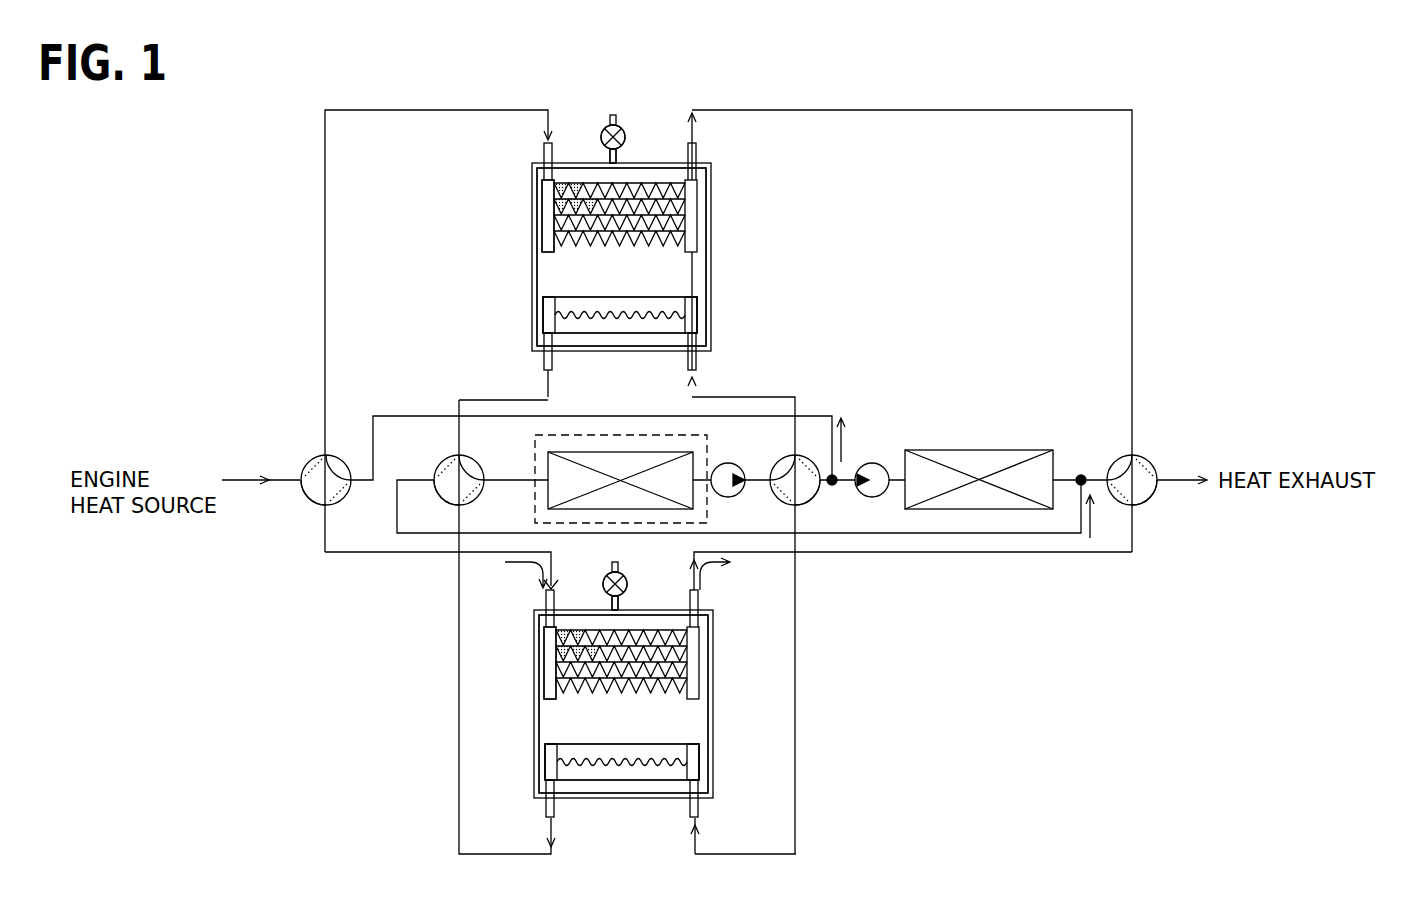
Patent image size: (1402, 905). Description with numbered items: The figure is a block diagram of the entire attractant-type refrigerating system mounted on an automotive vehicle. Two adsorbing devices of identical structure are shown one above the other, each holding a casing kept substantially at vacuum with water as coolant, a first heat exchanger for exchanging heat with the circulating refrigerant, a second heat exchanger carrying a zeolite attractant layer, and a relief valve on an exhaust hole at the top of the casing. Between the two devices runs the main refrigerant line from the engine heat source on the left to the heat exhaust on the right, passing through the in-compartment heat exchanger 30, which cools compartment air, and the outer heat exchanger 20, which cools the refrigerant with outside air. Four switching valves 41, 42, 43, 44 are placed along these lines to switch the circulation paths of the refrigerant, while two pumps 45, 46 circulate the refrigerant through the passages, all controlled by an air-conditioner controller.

The outer heat exchanger 20 is at (990, 450).
The in-compartment heat exchanger 30 is at (640, 452).
The switching valve 41 is at (308, 462).
The switching valve 42 is at (1113, 460).
The switching valve 43 is at (441, 462).
The switching valve 44 is at (797, 456).
The pump 45 is at (872, 463).
The pump 46 is at (733, 463).